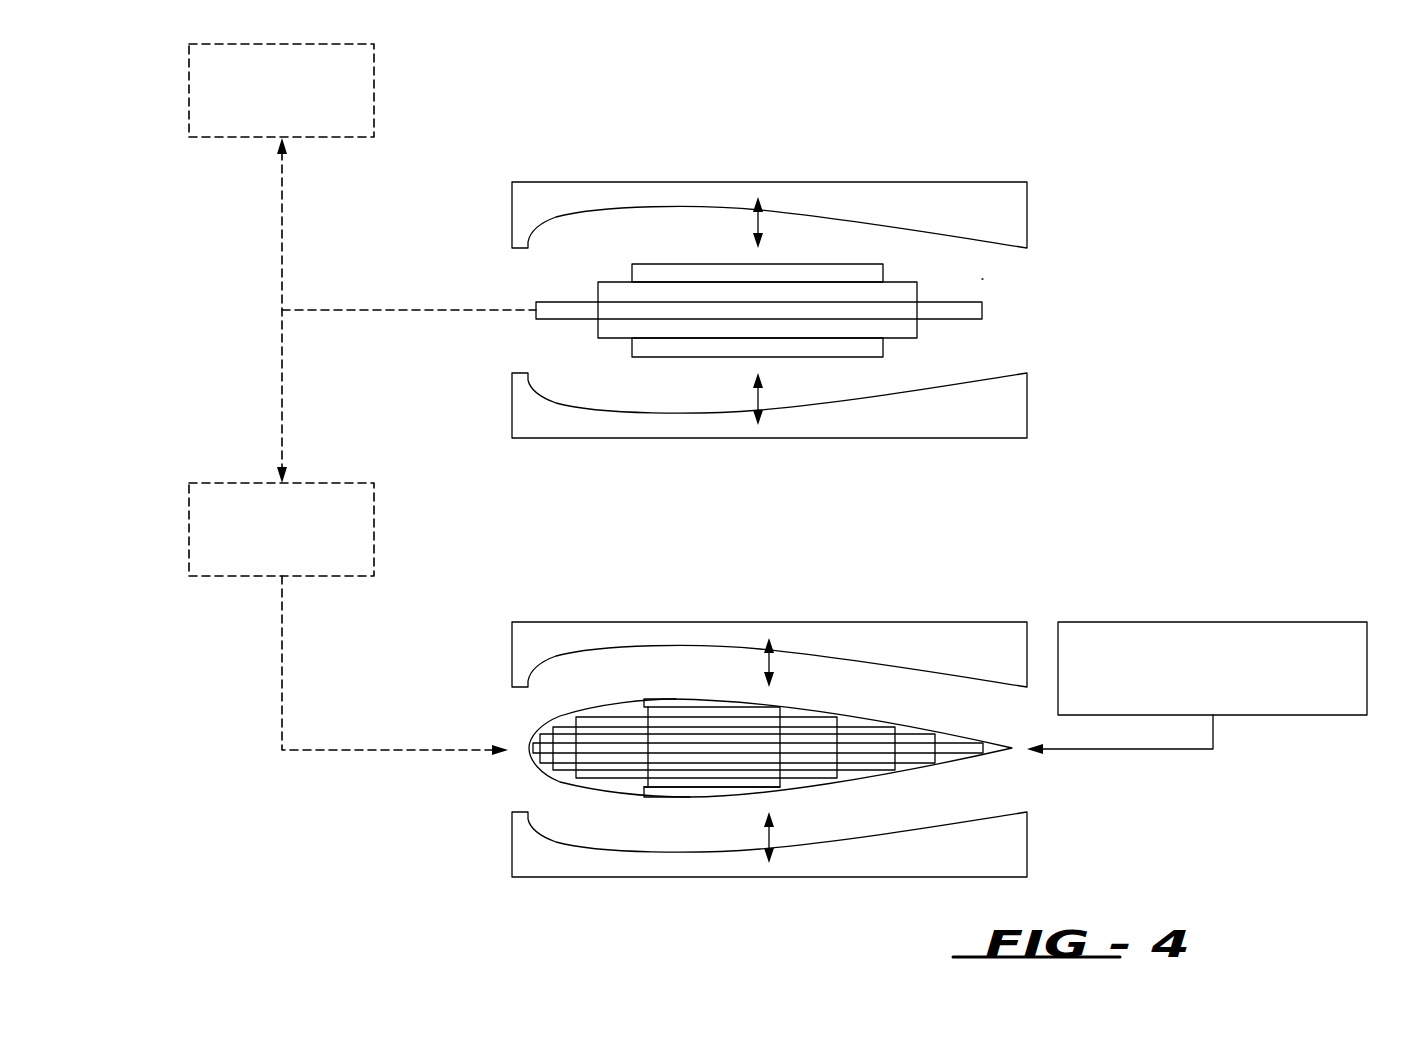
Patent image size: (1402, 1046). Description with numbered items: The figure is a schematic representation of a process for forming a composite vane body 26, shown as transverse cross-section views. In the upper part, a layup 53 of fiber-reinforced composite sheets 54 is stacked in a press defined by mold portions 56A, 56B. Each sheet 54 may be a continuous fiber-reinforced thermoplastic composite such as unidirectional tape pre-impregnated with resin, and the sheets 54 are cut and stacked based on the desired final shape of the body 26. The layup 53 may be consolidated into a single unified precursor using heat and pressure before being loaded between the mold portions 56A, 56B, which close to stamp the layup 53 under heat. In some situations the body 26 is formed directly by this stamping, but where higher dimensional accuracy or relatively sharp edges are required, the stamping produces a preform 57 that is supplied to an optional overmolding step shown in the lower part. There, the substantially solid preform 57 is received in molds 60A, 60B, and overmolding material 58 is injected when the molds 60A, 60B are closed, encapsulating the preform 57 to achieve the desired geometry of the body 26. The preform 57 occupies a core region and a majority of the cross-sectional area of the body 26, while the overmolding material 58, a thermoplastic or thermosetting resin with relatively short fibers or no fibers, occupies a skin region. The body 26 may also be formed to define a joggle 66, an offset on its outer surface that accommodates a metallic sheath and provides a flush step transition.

The body 26 is at (189, 90).
The layup 53 is at (993, 277).
The fiber-reinforced composite sheets 54 is at (632, 274).
The mold portion 56A is at (528, 196).
The mold portion 56B is at (525, 427).
The preform 57 is at (189, 530).
The overmolding material 58 is at (1302, 716).
The mold 60A is at (542, 637).
The mold 60B is at (525, 864).
The joggle 66 is at (648, 797).